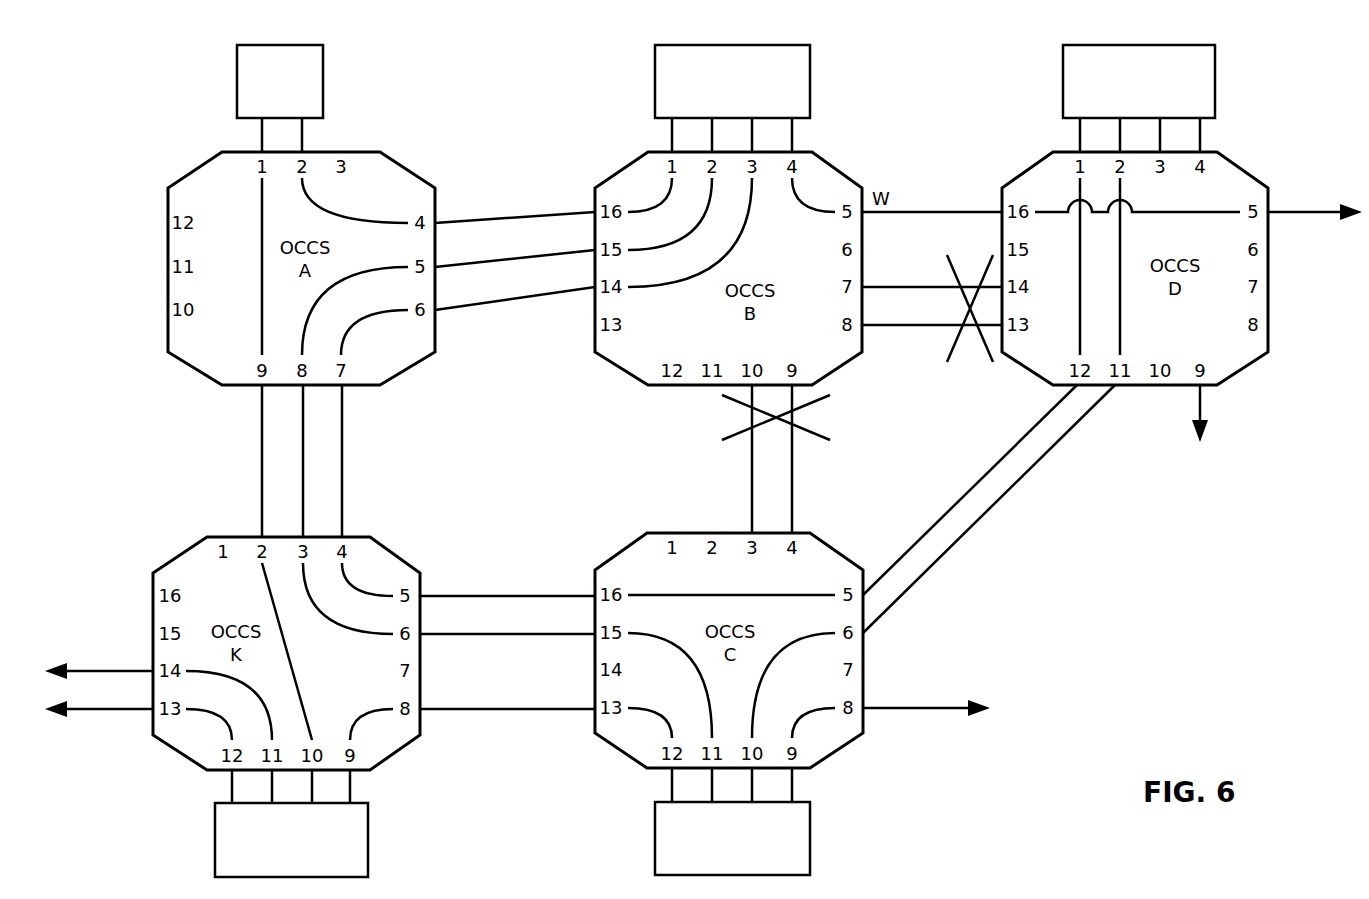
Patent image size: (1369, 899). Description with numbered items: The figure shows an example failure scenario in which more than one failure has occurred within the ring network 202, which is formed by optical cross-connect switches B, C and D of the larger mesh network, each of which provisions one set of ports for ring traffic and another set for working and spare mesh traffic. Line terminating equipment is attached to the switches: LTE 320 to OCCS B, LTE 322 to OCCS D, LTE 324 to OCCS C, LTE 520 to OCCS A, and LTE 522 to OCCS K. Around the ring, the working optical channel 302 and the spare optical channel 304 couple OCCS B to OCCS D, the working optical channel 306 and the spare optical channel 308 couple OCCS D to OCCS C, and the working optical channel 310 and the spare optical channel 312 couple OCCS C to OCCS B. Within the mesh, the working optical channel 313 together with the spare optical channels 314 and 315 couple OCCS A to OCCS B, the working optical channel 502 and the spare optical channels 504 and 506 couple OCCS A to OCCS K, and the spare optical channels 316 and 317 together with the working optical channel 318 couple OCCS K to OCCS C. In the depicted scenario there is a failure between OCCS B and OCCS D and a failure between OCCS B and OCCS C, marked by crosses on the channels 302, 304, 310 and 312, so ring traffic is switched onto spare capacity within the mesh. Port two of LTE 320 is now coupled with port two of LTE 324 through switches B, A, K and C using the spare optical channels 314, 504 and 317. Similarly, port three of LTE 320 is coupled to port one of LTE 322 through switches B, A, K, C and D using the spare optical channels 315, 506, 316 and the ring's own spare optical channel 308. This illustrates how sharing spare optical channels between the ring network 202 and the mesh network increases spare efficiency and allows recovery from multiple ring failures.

The LTE 520 is at (323, 75).
The LTE 320 is at (810, 75).
The LTE 322 is at (1215, 75).
The LTE 522 is at (368, 843).
The LTE 324 is at (810, 843).
The working optical channel 313 is at (452, 222).
The spare optical channel 314 is at (441, 266).
The spare optical channel 315 is at (515, 298).
The working optical channel 302 is at (893, 286).
The spare optical channel 304 is at (940, 326).
The working optical channel 502 is at (258, 470).
The spare optical channel 504 is at (301, 465).
The spare optical channel 506 is at (345, 465).
The working optical channel 310 is at (750, 475).
The spare optical channel 312 is at (795, 478).
The spare optical channel 316 is at (520, 596).
The spare optical channel 317 is at (525, 634).
The working optical channel 318 is at (530, 709).
The spare optical channel 308 is at (975, 485).
The working optical channel 306 is at (993, 500).
The ring network 202 is at (1100, 535).